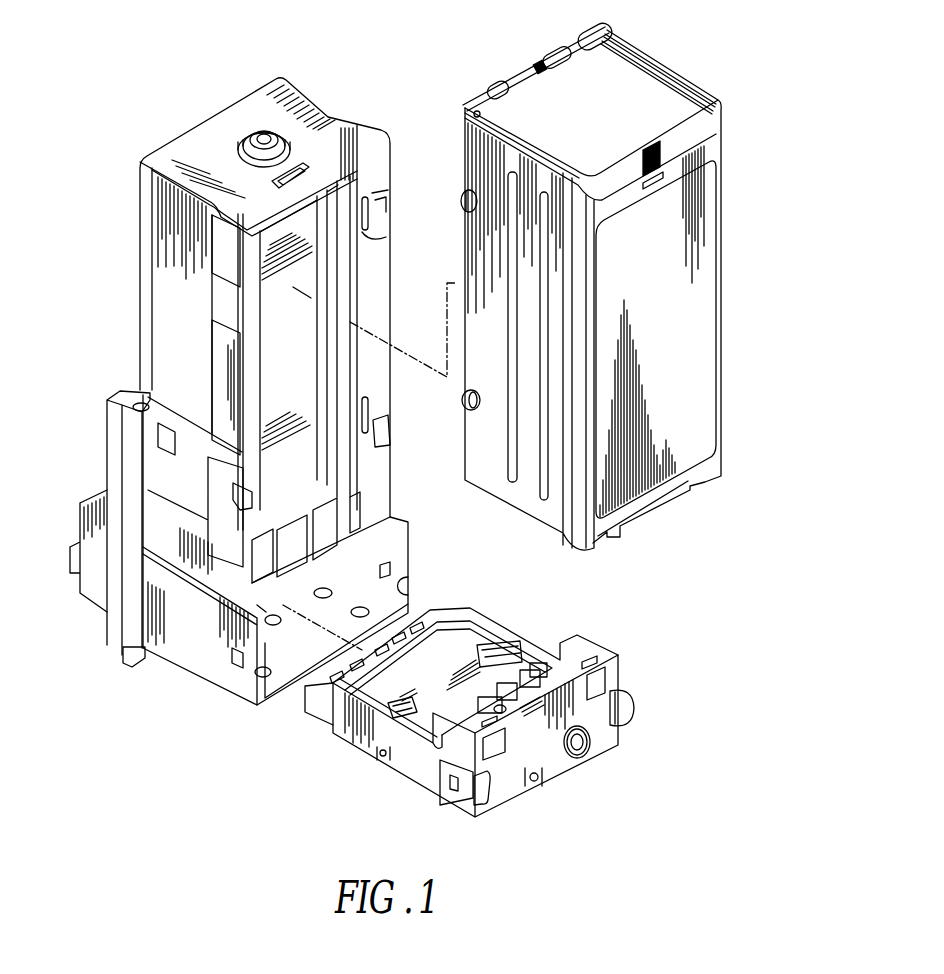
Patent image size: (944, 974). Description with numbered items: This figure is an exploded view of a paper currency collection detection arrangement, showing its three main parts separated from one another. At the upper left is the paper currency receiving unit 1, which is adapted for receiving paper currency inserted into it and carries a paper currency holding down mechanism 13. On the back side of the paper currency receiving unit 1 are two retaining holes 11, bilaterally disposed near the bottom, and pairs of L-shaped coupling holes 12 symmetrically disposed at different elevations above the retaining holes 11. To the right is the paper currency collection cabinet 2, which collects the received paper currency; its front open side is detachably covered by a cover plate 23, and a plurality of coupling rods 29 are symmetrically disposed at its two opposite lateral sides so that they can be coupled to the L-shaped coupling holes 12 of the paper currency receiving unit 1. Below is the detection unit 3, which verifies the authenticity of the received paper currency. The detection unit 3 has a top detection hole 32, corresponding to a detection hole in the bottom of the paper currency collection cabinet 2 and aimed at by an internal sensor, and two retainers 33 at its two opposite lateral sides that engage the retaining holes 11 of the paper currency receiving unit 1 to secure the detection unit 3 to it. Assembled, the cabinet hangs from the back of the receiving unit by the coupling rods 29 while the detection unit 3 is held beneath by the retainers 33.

The paper currency receiving unit 1 is at (193, 103).
The paper currency collection cabinet 2 is at (503, 70).
The detection unit 3 is at (418, 786).
The retaining holes 11 is at (235, 668).
The L-shaped coupling holes 12 is at (362, 232).
The paper currency holding down mechanism 13 is at (305, 279).
The cover plate 23 is at (686, 317).
The coupling rods 29 is at (461, 400).
The top detection hole 32 is at (502, 711).
The retainers 33 is at (487, 792).